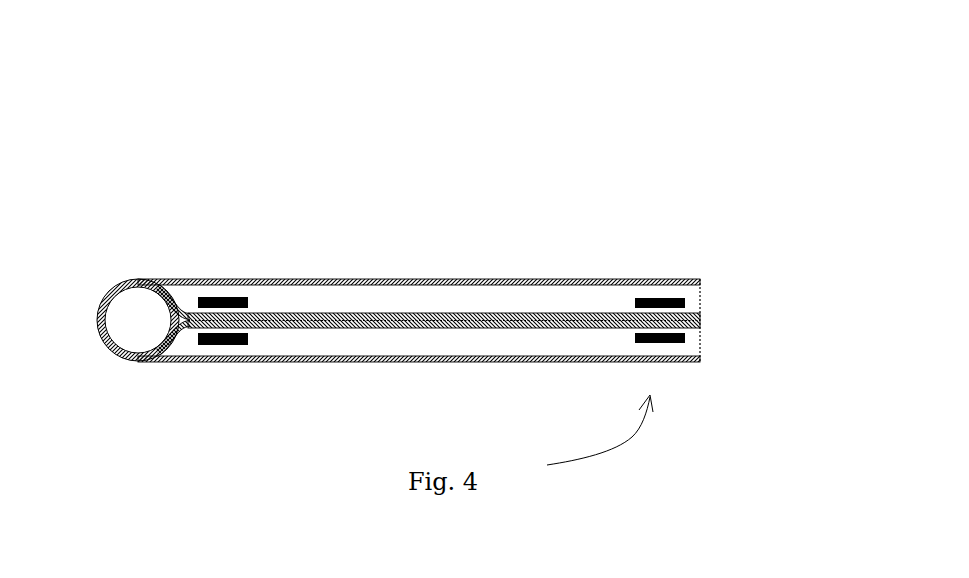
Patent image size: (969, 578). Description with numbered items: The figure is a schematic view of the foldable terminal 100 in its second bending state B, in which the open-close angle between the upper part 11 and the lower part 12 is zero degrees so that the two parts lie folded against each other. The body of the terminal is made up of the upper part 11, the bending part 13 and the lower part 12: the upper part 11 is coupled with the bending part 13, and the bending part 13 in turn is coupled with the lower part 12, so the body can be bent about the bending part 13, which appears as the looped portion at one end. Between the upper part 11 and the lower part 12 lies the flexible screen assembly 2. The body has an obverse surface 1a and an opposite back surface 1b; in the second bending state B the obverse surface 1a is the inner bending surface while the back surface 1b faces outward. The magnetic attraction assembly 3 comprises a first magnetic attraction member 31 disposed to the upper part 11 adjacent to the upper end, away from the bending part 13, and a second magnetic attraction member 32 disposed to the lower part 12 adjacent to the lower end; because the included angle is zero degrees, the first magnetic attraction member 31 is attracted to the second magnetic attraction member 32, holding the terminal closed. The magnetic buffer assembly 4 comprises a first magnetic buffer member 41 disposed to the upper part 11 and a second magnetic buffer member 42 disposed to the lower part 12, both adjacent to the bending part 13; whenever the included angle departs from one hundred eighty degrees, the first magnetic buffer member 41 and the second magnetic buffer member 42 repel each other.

The foldable terminal 100 is at (627, 100).
The upper part 11 is at (347, 291).
The lower part 12 is at (349, 349).
The bending part 13 is at (107, 313).
The obverse surface 1a is at (390, 330).
The back surface 1b is at (412, 279).
The flexible screen assembly 2 is at (449, 327).
The magnetic attraction assembly 3 is at (702, 315).
The first magnetic attraction member 31 is at (687, 304).
The second magnetic attraction member 32 is at (688, 332).
The magnetic buffer assembly 4 is at (225, 375).
The first magnetic buffer member 41 is at (248, 309).
The second magnetic buffer member 42 is at (215, 346).
The second bending state B is at (648, 240).